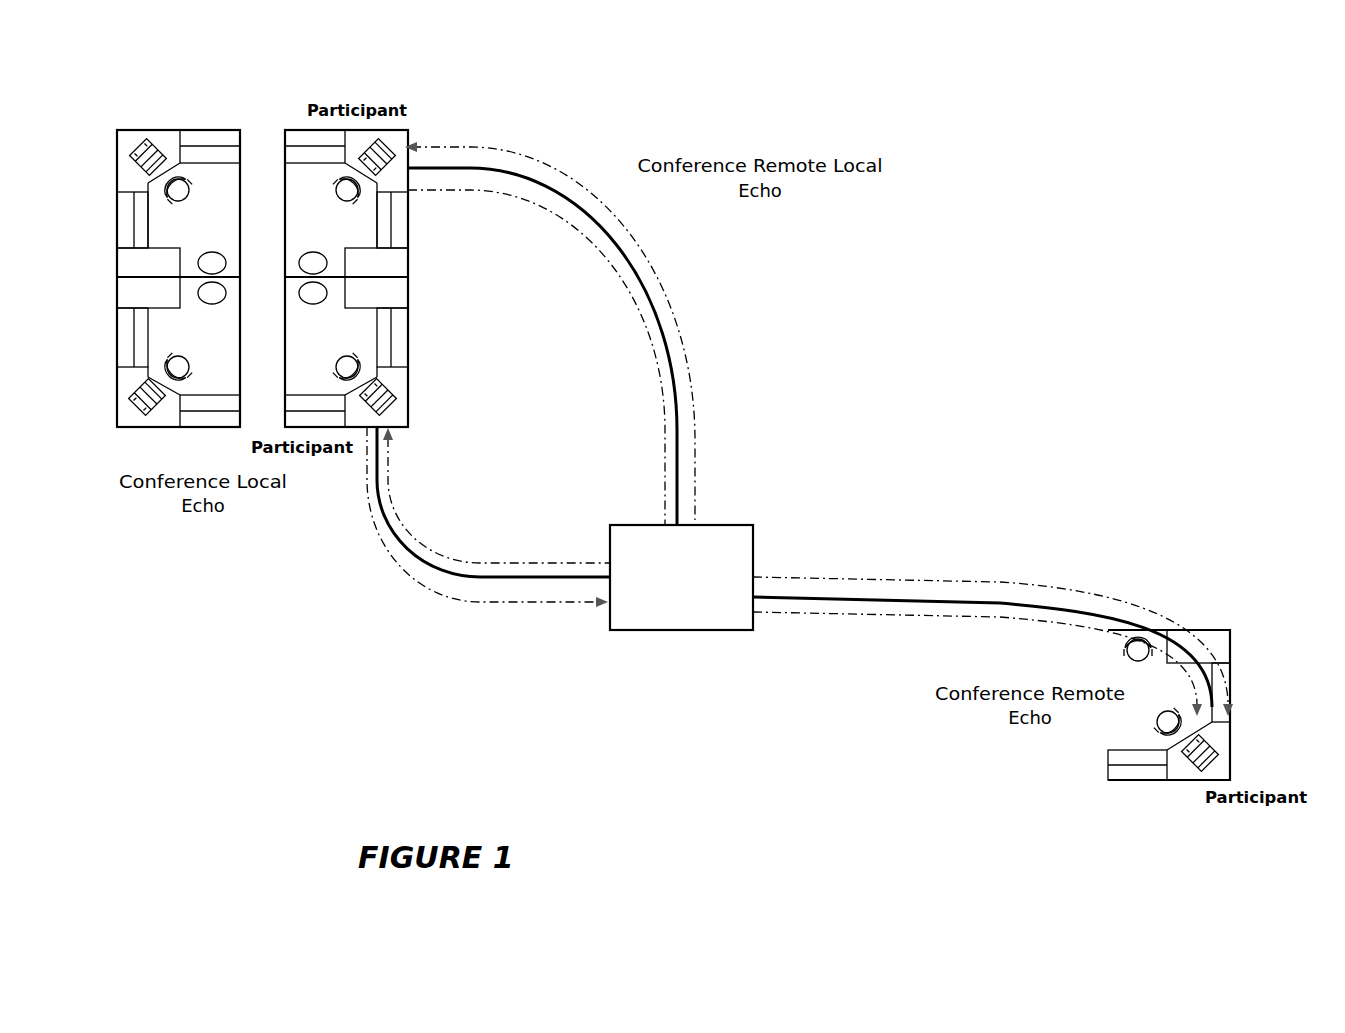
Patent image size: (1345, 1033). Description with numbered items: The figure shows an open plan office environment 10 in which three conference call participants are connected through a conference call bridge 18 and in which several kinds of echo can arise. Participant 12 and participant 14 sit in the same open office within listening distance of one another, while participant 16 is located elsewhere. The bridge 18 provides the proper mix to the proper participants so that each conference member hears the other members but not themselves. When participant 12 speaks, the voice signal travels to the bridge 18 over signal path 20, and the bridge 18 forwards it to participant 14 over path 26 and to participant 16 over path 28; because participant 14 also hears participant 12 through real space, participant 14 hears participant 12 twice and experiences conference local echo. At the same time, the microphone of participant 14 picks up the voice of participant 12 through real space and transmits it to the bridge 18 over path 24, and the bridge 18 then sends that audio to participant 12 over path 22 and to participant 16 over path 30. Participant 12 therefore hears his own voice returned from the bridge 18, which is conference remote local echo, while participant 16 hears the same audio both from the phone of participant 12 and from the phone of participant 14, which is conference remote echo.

The open plan office environment 10 is at (200, 76).
The participant 12 is at (383, 150).
The participant 14 is at (385, 410).
The participant 16 is at (1203, 768).
The conference call bridge 18 is at (681, 604).
The signal path 20 is at (493, 192).
The path 22 is at (518, 148).
The path 24 is at (430, 570).
The path 26 is at (418, 527).
The path 28 is at (958, 618).
The path 30 is at (903, 578).